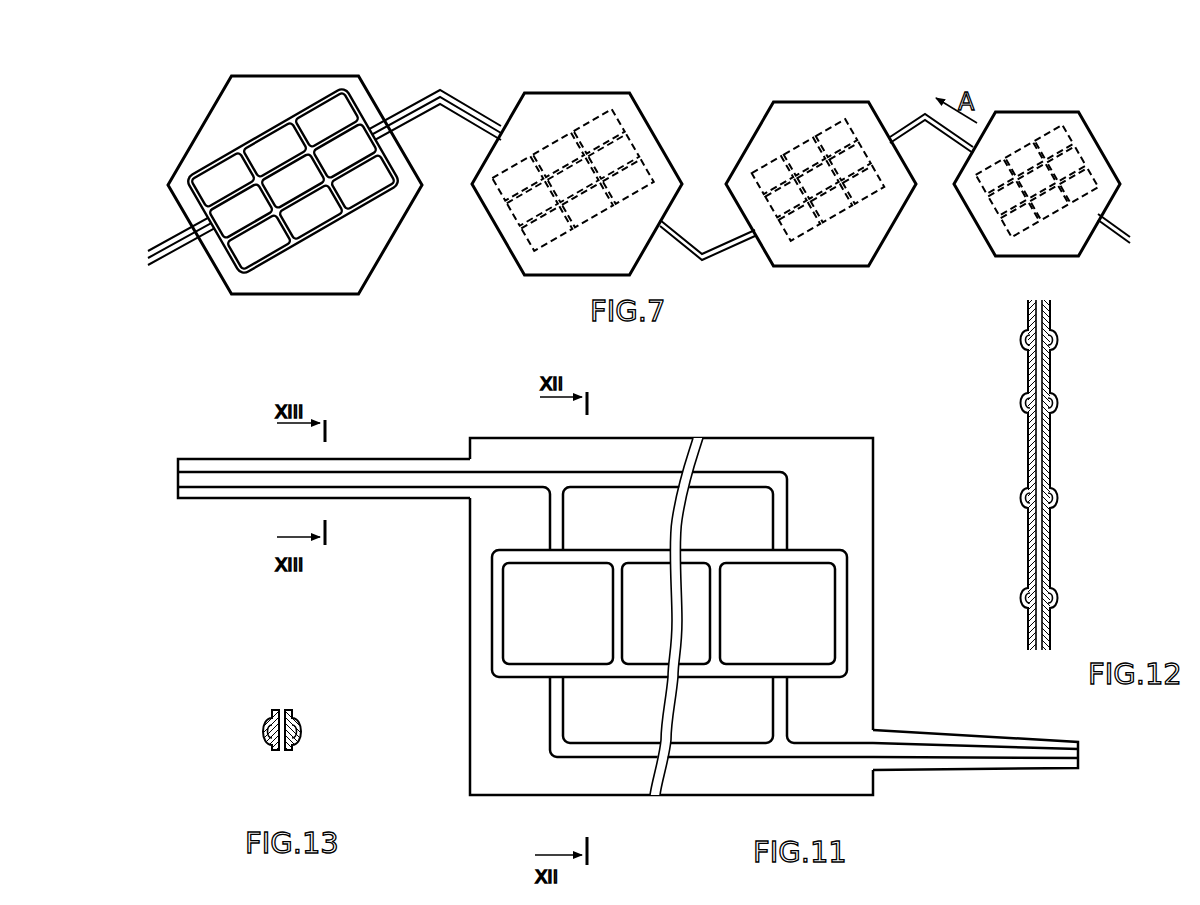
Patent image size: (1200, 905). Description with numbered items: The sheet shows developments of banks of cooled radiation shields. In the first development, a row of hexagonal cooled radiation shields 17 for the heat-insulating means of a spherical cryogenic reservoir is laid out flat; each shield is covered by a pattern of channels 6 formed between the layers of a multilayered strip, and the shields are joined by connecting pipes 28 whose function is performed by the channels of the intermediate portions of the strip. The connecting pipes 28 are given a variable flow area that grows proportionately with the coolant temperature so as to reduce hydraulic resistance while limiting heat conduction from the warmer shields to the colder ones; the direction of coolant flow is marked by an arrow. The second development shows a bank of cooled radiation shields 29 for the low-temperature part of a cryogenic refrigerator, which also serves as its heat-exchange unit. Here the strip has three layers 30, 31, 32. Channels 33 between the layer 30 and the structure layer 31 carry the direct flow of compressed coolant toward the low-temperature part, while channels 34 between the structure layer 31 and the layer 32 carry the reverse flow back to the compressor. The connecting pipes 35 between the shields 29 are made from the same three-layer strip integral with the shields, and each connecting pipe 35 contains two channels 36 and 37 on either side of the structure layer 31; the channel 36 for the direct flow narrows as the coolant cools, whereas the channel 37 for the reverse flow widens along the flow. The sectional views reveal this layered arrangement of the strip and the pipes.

In FIG. 7, the channels 6 is at (227, 130).
In FIG. 7, the hexagonal cooled radiation shields 17 is at (338, 83).
In FIG. 7, the connecting pipes 28 is at (453, 102).
In FIG. 11, the cooled radiation shields 29 is at (470, 599).
In FIG. 12, the layer 30 is at (1050, 455).
In FIG. 13, the layer 30 is at (296, 740).
In FIG. 12, the structure layer 31 is at (1040, 433).
In FIG. 13, the structure layer 31 is at (284, 712).
In FIG. 12, the layer 32 is at (1028, 444).
In FIG. 13, the layer 32 is at (268, 722).
In FIG. 12, the channels 33 is at (1055, 497).
In FIG. 12, the channels 34 is at (1022, 498).
In FIG. 11, the connecting pipes 35 is at (205, 470).
In FIG. 13, the channel 36 is at (297, 720).
In FIG. 13, the channel 37 is at (268, 735).